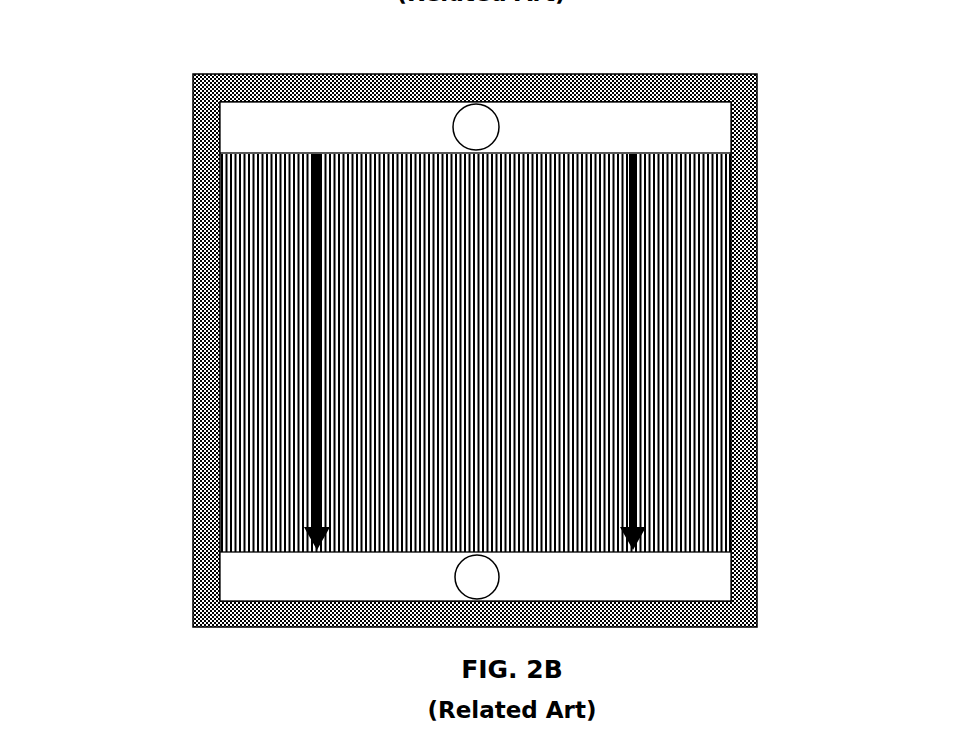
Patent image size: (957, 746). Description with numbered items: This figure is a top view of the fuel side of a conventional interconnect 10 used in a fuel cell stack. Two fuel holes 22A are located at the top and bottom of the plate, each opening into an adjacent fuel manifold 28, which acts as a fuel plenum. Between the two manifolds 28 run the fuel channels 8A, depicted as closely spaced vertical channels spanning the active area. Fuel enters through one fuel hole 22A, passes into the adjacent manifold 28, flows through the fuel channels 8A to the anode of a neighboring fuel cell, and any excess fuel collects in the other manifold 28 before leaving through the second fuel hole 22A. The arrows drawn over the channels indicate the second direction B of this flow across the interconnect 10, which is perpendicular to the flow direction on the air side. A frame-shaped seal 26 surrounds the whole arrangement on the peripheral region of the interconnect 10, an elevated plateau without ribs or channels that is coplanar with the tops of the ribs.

The interconnect 10 is at (150, 178).
The fuel hole 22A is at (492, 110).
The fuel manifold 28 is at (650, 127).
The second direction B is at (630, 298).
The fuel channels 8A is at (688, 332).
The frame-shaped seal 26 is at (740, 430).